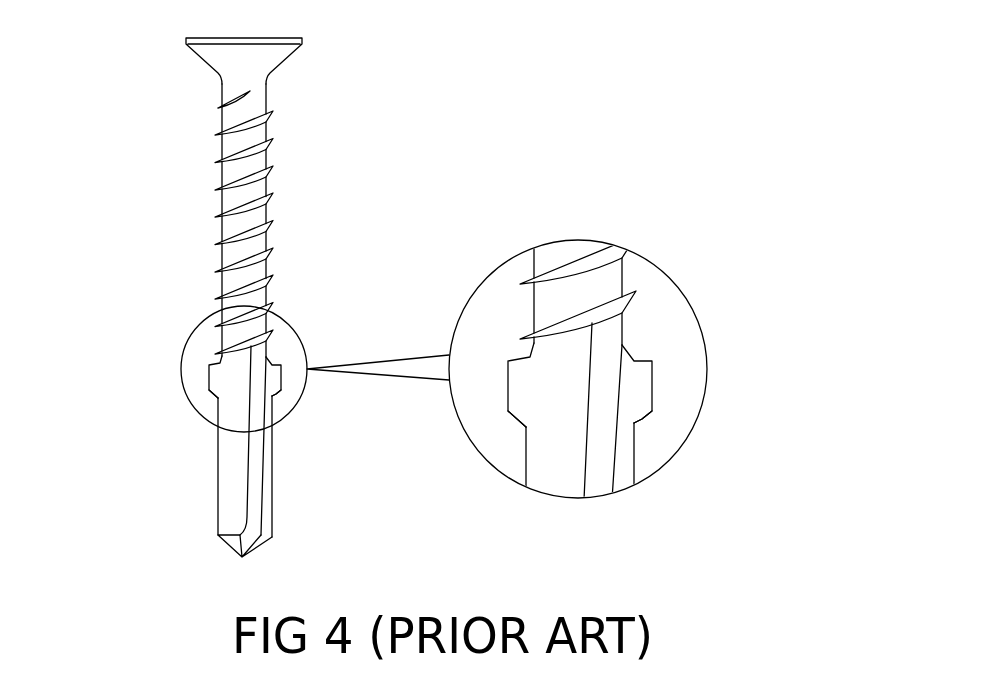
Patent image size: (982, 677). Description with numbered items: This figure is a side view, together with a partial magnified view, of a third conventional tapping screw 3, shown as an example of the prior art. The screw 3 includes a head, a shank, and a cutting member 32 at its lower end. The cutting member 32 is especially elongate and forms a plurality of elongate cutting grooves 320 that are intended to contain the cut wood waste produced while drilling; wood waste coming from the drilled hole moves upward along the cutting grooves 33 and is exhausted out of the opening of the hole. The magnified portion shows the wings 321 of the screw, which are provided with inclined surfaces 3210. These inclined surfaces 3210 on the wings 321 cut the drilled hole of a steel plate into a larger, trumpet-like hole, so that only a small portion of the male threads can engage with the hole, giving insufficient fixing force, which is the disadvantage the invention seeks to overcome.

The self-drilling screw 3 is at (188, 183).
The cutting member 32 is at (222, 470).
The cutting grooves 320 is at (286, 495).
The wings 321 is at (208, 378).
The inclined surfaces 3210 is at (209, 392).
The cutting grooves 33 is at (242, 557).